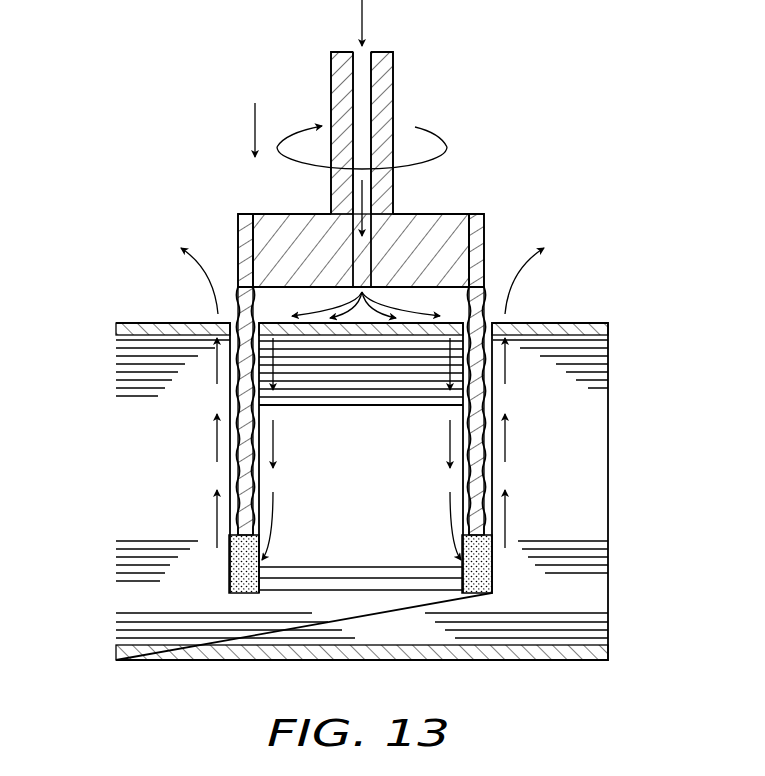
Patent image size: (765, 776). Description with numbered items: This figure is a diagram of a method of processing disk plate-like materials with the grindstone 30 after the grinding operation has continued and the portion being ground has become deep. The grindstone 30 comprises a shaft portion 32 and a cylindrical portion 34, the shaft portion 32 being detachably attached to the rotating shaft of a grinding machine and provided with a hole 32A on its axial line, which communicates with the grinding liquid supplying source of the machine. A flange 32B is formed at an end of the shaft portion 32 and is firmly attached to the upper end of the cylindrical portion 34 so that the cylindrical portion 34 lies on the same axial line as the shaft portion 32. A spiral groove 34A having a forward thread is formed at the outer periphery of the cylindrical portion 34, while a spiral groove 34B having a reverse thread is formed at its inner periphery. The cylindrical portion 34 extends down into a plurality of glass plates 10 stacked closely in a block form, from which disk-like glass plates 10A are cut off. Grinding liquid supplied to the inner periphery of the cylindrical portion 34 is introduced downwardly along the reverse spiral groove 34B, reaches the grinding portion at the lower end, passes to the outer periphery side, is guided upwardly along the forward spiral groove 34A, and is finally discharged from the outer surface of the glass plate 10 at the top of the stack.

The glass plate 10 is at (116, 350).
The disk-like glass plate 10A is at (338, 406).
The grindstone 30 is at (401, 100).
The shaft portion 32 is at (390, 182).
The hole 32A is at (364, 70).
The flange 32B is at (462, 213).
The cylindrical portion 34 is at (238, 213).
The spiral groove of forward thread 34A is at (237, 464).
The spiral groove of reverse thread 34B is at (254, 480).